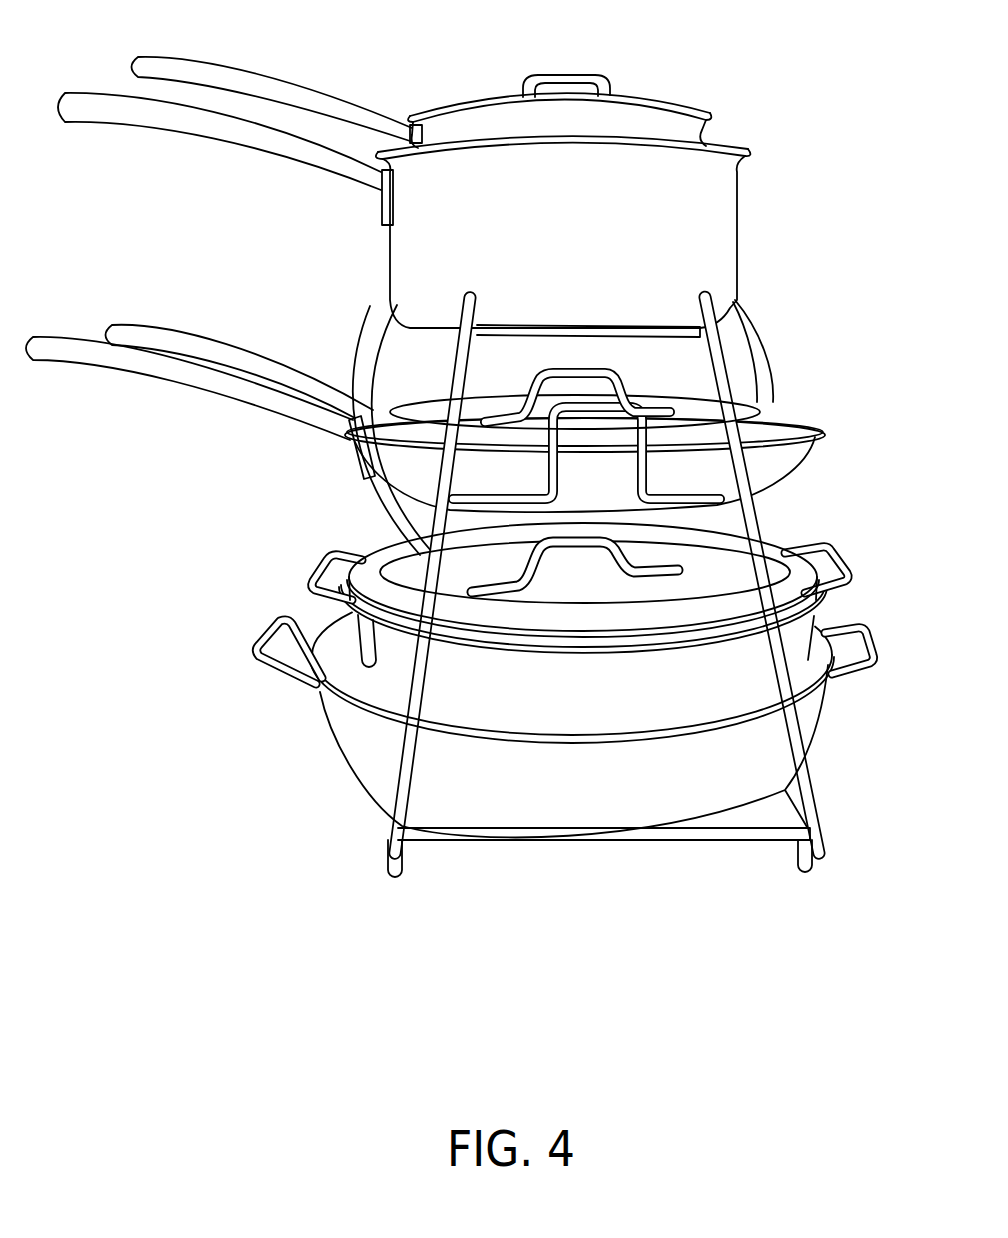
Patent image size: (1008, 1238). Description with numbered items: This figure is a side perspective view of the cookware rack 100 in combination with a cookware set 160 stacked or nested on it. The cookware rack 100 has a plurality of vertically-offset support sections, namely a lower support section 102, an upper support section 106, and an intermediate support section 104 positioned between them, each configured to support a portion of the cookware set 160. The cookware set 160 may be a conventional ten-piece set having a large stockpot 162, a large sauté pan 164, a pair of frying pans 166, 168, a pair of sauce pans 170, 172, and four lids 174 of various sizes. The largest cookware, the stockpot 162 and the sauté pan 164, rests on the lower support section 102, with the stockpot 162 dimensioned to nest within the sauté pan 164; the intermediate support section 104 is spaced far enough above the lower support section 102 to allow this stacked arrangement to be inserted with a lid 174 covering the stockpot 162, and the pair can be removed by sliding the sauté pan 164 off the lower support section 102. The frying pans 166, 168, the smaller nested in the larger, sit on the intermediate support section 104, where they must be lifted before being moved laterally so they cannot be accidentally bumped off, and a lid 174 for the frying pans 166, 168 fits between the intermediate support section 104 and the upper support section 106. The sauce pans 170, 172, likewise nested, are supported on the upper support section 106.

The cookware rack 100 is at (808, 96).
The lower support section 102 is at (690, 838).
The intermediate support section 104 is at (742, 509).
The upper support section 106 is at (738, 322).
The cookware set 160 is at (812, 350).
The stockpot 162 is at (388, 657).
The sauté pan 164 is at (353, 747).
The frying pan 166 is at (815, 428).
The frying pan 168 is at (407, 476).
The sauce pan 170 is at (396, 246).
The sauce pan 172 is at (443, 132).
The lid 174 is at (496, 94).